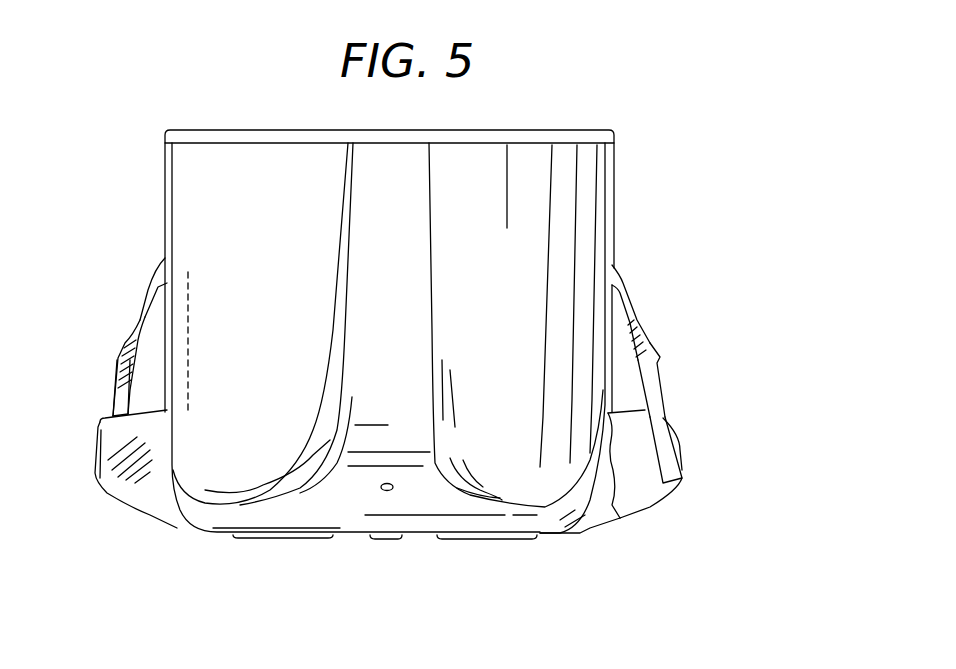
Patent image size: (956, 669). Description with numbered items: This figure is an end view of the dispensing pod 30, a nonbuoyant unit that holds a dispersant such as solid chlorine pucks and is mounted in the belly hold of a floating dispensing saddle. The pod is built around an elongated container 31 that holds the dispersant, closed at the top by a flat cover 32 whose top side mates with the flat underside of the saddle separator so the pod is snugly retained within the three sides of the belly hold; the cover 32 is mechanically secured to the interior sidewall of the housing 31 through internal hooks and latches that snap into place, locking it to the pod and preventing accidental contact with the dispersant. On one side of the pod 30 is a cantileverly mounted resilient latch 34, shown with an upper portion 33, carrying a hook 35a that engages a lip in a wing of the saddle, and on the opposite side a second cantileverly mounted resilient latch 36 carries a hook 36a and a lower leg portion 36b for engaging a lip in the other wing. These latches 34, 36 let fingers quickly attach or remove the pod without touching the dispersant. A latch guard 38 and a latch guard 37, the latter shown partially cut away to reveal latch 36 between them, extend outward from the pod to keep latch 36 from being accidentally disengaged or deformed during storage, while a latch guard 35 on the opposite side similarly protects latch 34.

The dispensing pod 30 is at (355, 298).
The elongated container 31 is at (203, 214).
The cover 32 is at (290, 130).
The left resilient arm upper portion 33 is at (165, 233).
The resilient latch 34 is at (147, 310).
The latch guard 35 is at (97, 430).
The hook 35a is at (117, 358).
The resilient latch 36 is at (637, 320).
The hook 36a is at (662, 362).
The right arm lower leg 36b is at (665, 463).
The latch guard 37 is at (610, 522).
The latch guard 38 is at (670, 500).